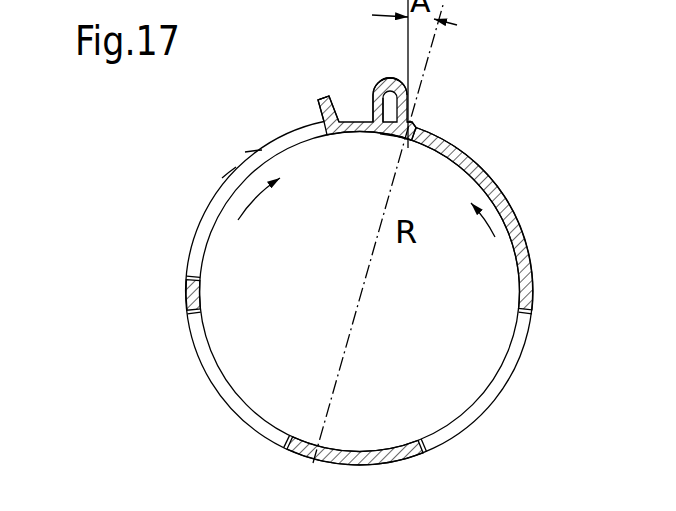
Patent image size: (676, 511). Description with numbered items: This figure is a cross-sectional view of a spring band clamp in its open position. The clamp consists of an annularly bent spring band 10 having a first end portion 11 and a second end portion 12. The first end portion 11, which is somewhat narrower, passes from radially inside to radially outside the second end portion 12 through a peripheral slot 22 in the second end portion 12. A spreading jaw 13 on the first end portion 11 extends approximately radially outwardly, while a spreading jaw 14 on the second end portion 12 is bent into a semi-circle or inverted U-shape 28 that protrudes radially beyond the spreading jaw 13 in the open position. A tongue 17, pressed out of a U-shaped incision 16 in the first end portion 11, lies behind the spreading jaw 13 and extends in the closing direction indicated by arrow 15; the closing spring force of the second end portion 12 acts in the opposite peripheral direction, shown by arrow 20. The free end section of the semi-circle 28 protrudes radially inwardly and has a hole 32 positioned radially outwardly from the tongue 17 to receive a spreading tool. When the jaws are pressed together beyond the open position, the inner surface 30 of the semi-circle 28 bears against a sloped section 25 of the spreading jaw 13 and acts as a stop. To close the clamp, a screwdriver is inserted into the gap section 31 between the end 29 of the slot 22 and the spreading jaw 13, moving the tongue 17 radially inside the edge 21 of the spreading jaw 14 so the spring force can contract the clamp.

The spring band 10 is at (533, 273).
The first end portion 11 is at (501, 191).
The second end portion 12 is at (253, 158).
The spreading jaw 13 is at (318, 107).
The spreading jaw 14 is at (383, 79).
The closing direction 15 is at (475, 228).
The U-shaped incision 16 is at (410, 146).
The tongue 17 is at (421, 129).
The arrow 20 is at (260, 207).
The edge 21 is at (393, 132).
The peripheral slot 22 is at (230, 187).
The sloped section 25 is at (337, 99).
The semi-circle 28 is at (390, 79).
The end of slot 29 is at (371, 96).
The inner surface 30 is at (388, 136).
The gap section 31 is at (372, 110).
The hole 32 is at (402, 105).